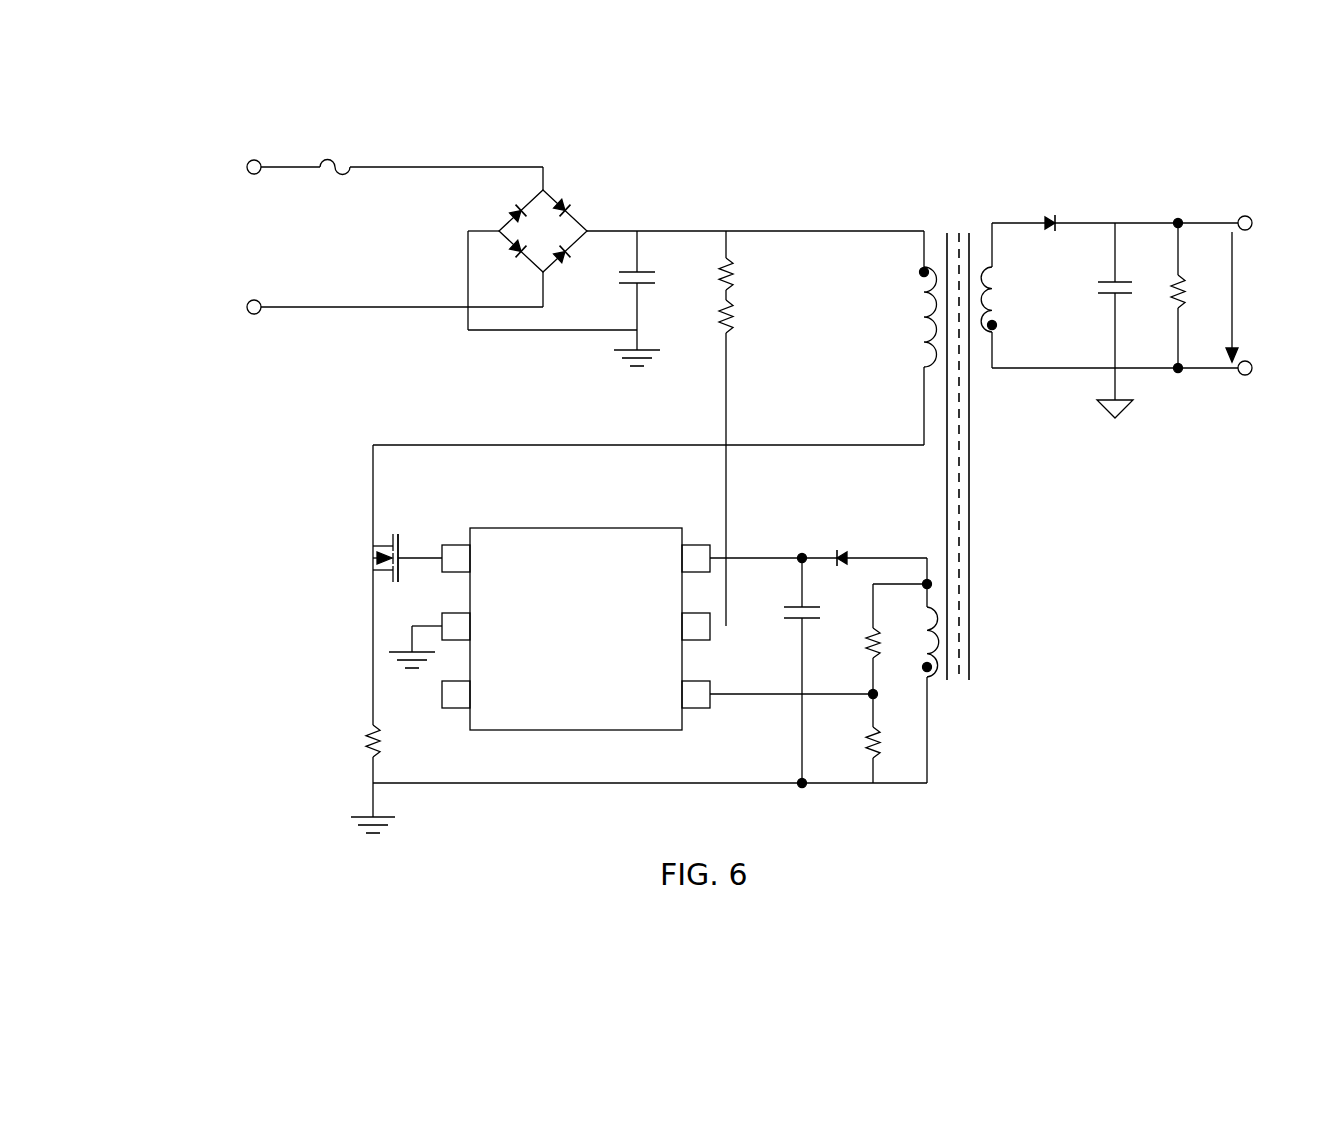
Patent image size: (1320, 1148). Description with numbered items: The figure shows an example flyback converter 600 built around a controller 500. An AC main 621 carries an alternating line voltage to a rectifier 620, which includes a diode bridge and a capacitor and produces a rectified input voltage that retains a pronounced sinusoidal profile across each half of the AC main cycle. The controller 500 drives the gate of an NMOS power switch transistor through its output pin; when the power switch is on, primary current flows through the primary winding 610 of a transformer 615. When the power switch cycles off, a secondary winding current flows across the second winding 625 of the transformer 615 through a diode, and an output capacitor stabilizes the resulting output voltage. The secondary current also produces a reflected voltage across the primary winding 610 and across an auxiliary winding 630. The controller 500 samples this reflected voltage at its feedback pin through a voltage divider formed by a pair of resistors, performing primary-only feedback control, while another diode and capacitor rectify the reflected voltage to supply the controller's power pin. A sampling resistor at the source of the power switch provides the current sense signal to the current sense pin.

The controller 500 is at (576, 528).
The flyback converter 600 is at (826, 148).
The primary winding 610 is at (924, 311).
The transformer 615 is at (957, 184).
The rectifier 620 is at (597, 180).
The AC main 621 is at (222, 160).
The second winding 625 is at (1000, 278).
The auxiliary winding 630 is at (935, 682).